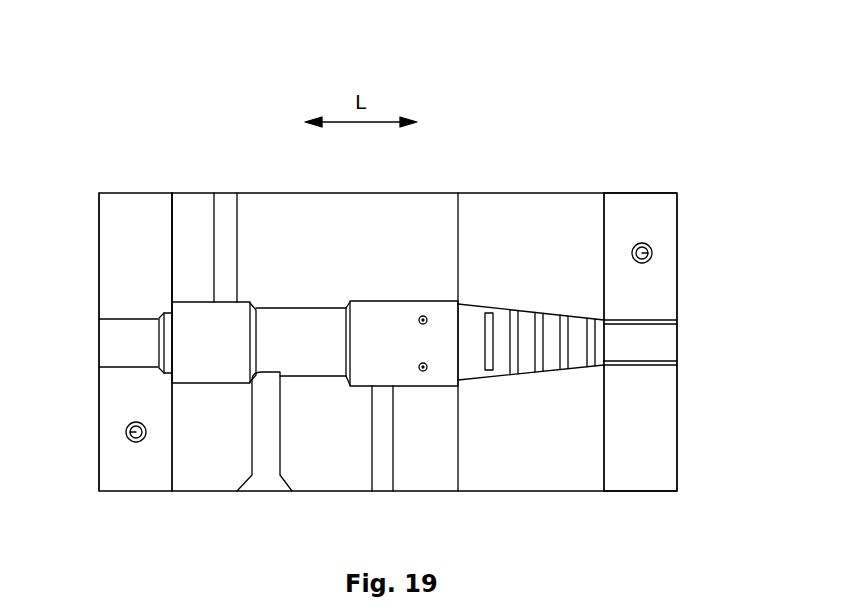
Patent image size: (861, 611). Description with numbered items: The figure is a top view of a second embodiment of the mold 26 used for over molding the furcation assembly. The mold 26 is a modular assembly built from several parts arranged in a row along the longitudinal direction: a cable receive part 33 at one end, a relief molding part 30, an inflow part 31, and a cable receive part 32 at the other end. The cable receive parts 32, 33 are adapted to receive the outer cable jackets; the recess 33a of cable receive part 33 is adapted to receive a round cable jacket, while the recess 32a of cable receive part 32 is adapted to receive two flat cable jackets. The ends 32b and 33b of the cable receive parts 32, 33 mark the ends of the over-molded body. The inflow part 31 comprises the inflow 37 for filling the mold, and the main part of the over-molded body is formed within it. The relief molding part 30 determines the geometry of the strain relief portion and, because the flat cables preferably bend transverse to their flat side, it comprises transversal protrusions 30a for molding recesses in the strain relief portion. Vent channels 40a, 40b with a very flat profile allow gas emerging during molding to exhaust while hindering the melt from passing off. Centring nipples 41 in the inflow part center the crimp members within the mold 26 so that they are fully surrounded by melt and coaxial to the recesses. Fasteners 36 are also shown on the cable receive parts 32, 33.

The mold 26 is at (663, 148).
The relief molding part 30 is at (572, 203).
The transversal protrusions 30a is at (517, 325).
The inflow part 31 is at (412, 203).
The cable receive part 32 is at (655, 218).
The recess 32a is at (658, 350).
The end 32b is at (607, 286).
The cable receive part 33 is at (113, 283).
The recess 33a is at (113, 350).
The end 33b is at (172, 220).
The fastening screws 36 is at (125, 432).
The inflow 37 is at (270, 467).
The vent channel 40a is at (387, 473).
The vent channel 40b is at (222, 203).
The centring nipples 41 is at (423, 371).